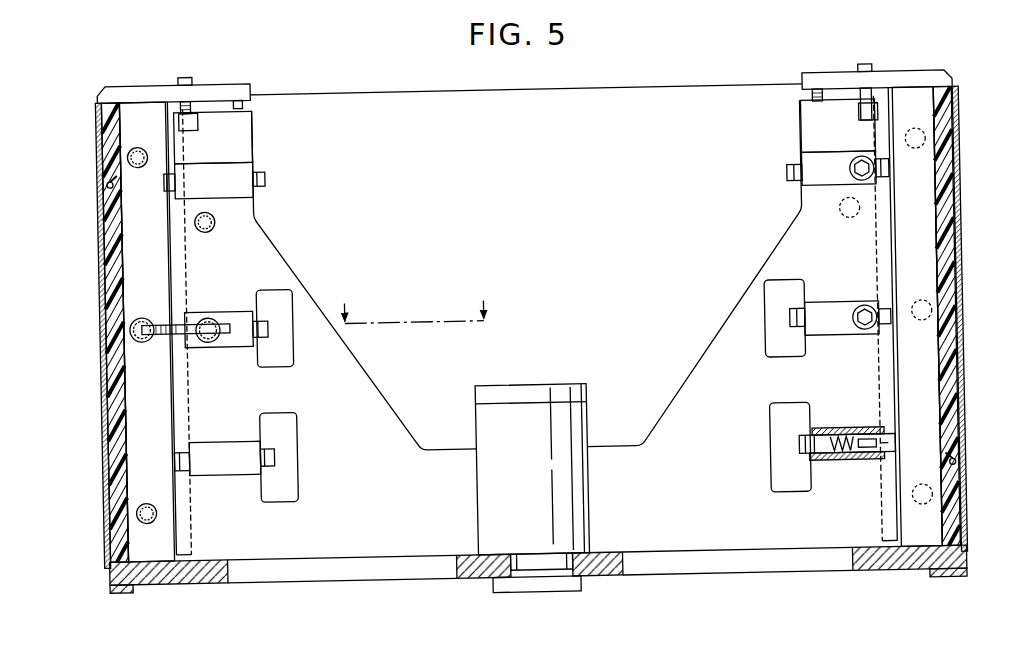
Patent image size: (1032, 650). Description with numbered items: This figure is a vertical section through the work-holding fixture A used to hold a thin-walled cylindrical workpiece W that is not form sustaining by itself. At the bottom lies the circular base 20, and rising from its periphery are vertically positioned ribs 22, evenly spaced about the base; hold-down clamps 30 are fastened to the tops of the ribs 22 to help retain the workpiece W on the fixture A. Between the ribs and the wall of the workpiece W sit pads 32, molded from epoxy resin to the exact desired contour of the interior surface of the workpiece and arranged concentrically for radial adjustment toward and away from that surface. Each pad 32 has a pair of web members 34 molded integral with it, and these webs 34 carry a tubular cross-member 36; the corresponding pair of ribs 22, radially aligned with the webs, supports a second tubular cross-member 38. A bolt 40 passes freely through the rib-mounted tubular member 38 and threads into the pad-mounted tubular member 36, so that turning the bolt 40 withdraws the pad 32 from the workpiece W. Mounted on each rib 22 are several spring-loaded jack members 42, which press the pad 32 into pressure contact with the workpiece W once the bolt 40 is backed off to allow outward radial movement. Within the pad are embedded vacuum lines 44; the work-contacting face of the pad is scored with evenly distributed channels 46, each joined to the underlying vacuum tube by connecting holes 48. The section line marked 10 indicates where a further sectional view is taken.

The section line 10- 10 is at (434, 298).
The circular base 20 is at (238, 567).
The rib 22 is at (269, 246).
The hold-down clamp 30 is at (157, 78).
The pad 32 is at (111, 263).
The web member 34 is at (143, 392).
The cross-member 36 is at (145, 308).
The cross-member 38 is at (209, 307).
The bolt 40 is at (234, 333).
The spring-loaded jack member 42 is at (237, 156).
The vacuum line 44 is at (111, 186).
The channel 46 is at (111, 135).
The connecting hole 48 is at (108, 172).
The work-holding fixture A is at (328, 579).
The workpiece W is at (104, 458).